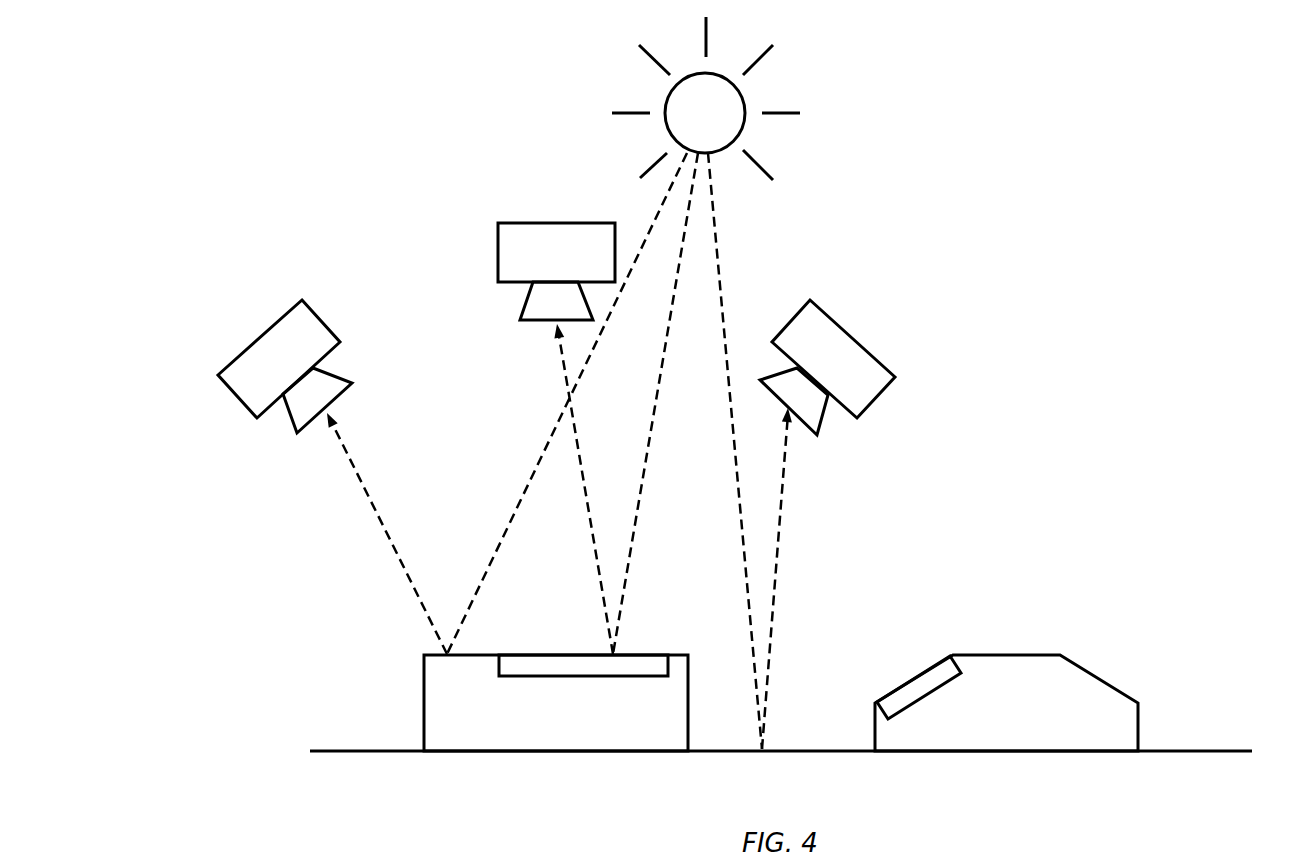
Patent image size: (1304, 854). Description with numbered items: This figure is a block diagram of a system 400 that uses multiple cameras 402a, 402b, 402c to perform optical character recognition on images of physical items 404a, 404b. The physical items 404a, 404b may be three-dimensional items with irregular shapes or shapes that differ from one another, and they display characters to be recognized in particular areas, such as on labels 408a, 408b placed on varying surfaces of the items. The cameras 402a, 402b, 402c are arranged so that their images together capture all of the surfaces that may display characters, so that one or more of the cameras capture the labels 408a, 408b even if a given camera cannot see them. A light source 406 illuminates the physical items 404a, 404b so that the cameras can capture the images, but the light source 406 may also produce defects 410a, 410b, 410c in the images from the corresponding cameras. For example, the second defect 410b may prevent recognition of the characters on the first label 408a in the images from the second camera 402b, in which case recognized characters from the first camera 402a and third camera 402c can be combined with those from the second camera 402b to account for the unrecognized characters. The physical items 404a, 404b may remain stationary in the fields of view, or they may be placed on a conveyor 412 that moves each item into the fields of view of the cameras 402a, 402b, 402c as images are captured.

The system 400 is at (255, 170).
The first camera 402a is at (256, 341).
The second camera 402b is at (548, 223).
The third camera 402c is at (853, 338).
The first physical item 404a is at (679, 741).
The second physical item 404b is at (1128, 741).
The light source 406 is at (728, 134).
The first label 408a is at (578, 655).
The second label 408b is at (912, 681).
The first defect 410a is at (436, 650).
The second defect 410b is at (620, 650).
The third defect 410c is at (774, 745).
The conveyor 412 is at (1196, 750).